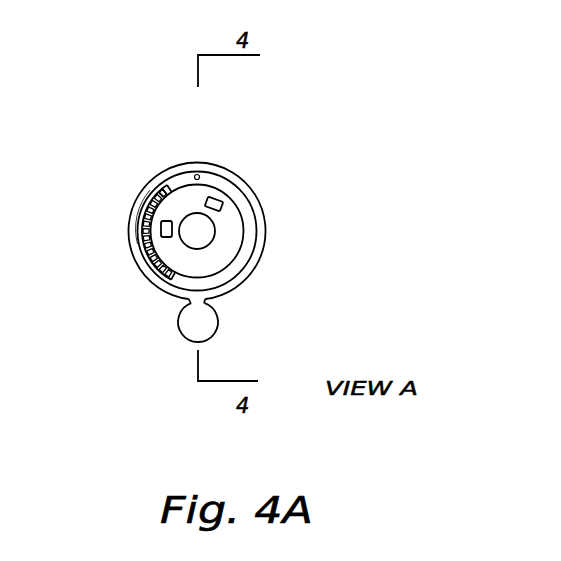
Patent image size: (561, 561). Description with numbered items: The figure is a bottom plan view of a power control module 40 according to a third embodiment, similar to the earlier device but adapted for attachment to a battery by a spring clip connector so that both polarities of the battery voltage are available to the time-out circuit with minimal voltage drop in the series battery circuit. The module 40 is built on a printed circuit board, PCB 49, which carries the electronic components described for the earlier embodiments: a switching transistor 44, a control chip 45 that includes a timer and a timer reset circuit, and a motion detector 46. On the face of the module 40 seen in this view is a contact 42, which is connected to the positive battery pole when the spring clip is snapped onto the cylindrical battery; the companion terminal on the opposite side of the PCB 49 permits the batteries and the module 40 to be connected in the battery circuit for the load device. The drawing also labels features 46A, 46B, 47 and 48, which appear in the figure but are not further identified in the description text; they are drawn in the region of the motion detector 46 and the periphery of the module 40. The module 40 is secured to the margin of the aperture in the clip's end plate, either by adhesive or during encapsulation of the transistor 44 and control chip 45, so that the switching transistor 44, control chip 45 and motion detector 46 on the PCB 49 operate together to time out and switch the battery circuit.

The power control module 40 is at (268, 240).
The contact 42 is at (207, 238).
The switching transistor 44 is at (160, 232).
The control chip 45 is at (222, 210).
The motion detector 46 is at (163, 185).
The pivot pin 46A is at (201, 172).
The rack end 46B is at (160, 181).
The inner ring wall 47 is at (147, 190).
The lug boss 48 is at (182, 335).
The PCB 49 is at (175, 258).